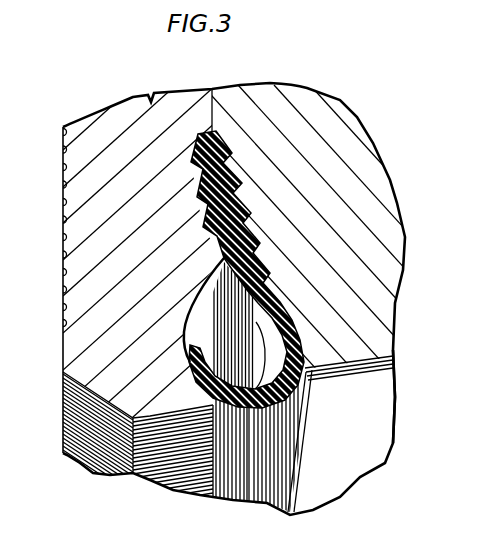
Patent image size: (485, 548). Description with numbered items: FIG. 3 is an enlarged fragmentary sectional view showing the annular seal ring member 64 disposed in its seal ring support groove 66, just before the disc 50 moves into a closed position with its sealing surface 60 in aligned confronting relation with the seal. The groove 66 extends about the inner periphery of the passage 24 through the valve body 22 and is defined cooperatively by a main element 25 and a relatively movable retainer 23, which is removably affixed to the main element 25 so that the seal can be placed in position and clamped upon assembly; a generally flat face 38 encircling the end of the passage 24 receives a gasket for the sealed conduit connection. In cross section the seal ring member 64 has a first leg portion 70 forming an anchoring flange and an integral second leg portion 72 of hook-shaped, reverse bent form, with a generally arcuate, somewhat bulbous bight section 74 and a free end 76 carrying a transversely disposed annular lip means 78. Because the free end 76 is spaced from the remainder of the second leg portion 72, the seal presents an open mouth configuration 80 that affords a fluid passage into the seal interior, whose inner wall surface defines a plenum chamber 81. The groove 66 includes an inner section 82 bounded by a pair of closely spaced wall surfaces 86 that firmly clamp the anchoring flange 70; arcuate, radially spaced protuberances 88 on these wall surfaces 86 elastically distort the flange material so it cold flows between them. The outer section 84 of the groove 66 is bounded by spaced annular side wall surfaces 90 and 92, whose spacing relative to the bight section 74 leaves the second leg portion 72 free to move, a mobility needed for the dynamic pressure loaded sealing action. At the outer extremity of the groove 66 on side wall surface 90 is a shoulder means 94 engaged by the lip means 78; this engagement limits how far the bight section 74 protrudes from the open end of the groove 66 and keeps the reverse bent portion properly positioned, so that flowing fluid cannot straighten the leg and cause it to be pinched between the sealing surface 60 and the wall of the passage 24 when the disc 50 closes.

The valve body 22 is at (247, 82).
The retainer 23 is at (148, 95).
The passage 24 is at (83, 477).
The main element 25 is at (310, 95).
The flat face 38 is at (63, 147).
The disc 50 is at (387, 408).
The sealing surface 60 is at (352, 377).
The seal ring member 64 is at (253, 257).
The seal ring support groove 66 is at (207, 332).
The first leg portion 70 is at (227, 165).
The second leg portion 72 is at (282, 288).
The bight section 74 is at (302, 445).
The free end 76 is at (227, 395).
The lip means 78 is at (199, 357).
The open mouth configuration 80 is at (250, 340).
The plenum chamber 81 is at (253, 398).
The inner section 82 is at (258, 210).
The outer section 84 is at (301, 318).
The wall surfaces 86 is at (212, 168).
The protuberances 88 is at (204, 196).
The side wall surface 90 is at (217, 313).
The side wall surface 92 is at (306, 343).
The shoulder means 94 is at (185, 363).